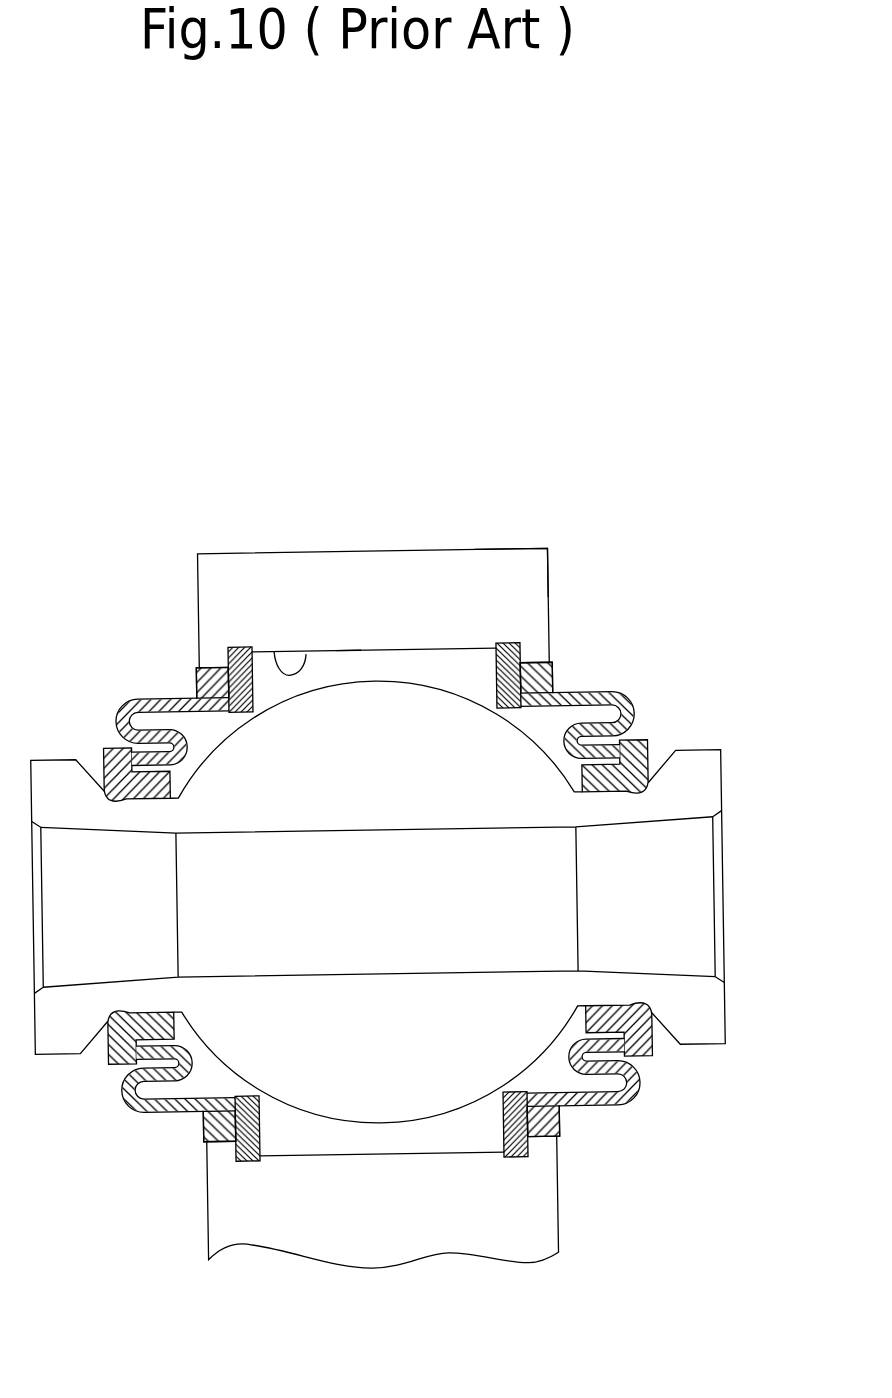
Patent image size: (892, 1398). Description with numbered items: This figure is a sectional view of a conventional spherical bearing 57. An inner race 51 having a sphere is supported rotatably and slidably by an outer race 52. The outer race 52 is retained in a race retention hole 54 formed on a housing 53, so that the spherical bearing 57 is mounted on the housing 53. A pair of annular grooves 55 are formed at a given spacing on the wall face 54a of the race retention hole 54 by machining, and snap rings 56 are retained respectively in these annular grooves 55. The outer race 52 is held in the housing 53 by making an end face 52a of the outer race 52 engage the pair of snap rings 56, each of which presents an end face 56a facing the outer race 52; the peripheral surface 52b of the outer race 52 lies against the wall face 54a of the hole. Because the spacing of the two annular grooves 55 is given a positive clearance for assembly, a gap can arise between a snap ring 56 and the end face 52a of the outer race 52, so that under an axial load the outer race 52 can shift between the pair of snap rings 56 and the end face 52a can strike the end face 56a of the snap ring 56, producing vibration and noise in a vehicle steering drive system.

The inner race 51 is at (703, 749).
The outer race 52 is at (427, 650).
The end face 52a is at (243, 713).
The peripheral surface 52b is at (387, 652).
The housing 53 is at (521, 547).
The race retention hole 54 is at (351, 658).
The wall face 54a is at (274, 652).
The annular groove 55 is at (220, 667).
The snap ring 56 is at (250, 1166).
The end face 56a is at (263, 668).
The spherical bearing 57 is at (413, 460).